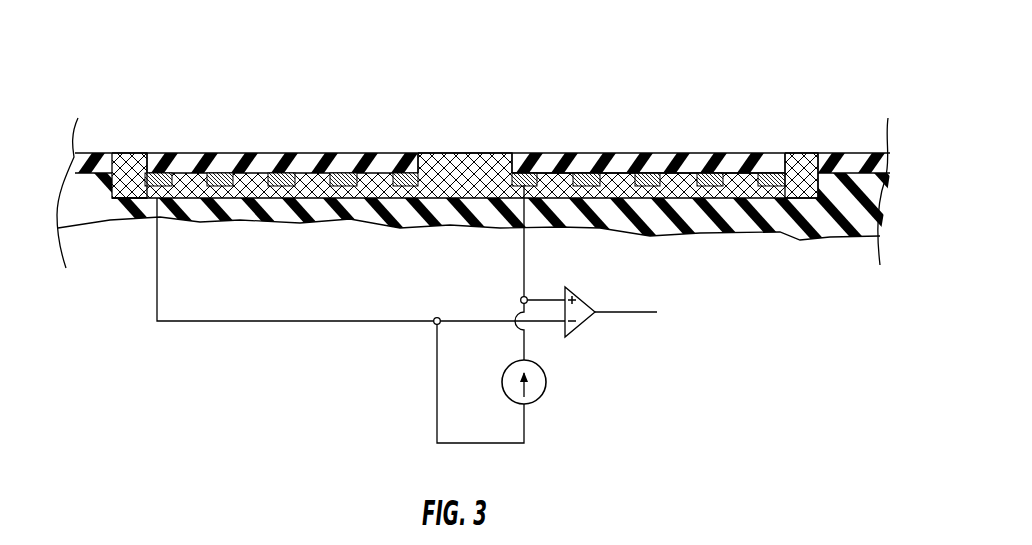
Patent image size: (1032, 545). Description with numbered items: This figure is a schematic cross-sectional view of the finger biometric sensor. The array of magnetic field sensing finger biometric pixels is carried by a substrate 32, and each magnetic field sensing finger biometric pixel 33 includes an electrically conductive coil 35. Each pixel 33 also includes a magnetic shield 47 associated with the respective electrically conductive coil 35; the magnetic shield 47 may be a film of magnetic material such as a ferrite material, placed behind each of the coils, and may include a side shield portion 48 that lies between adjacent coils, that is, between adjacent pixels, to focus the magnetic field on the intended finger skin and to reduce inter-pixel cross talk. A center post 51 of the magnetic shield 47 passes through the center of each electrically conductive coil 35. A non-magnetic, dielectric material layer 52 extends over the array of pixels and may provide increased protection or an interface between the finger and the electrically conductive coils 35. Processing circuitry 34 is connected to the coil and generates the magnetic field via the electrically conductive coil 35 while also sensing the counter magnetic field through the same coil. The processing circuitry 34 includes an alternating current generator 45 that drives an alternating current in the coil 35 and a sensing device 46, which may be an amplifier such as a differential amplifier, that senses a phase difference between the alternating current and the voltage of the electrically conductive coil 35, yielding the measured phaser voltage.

The substrate 32 is at (343, 207).
The magnetic field sensing finger biometric pixel 33 is at (265, 98).
The processing circuitry 34 is at (478, 314).
The electrically conductive coil 35 is at (785, 153).
The alternating current generator 45 is at (535, 402).
The sensing device 46 is at (585, 300).
The magnetic shield 47 is at (268, 202).
The side shield portion 48 is at (112, 201).
The center post 51 is at (465, 167).
The non-magnetic, dielectric material layer 52 is at (190, 153).